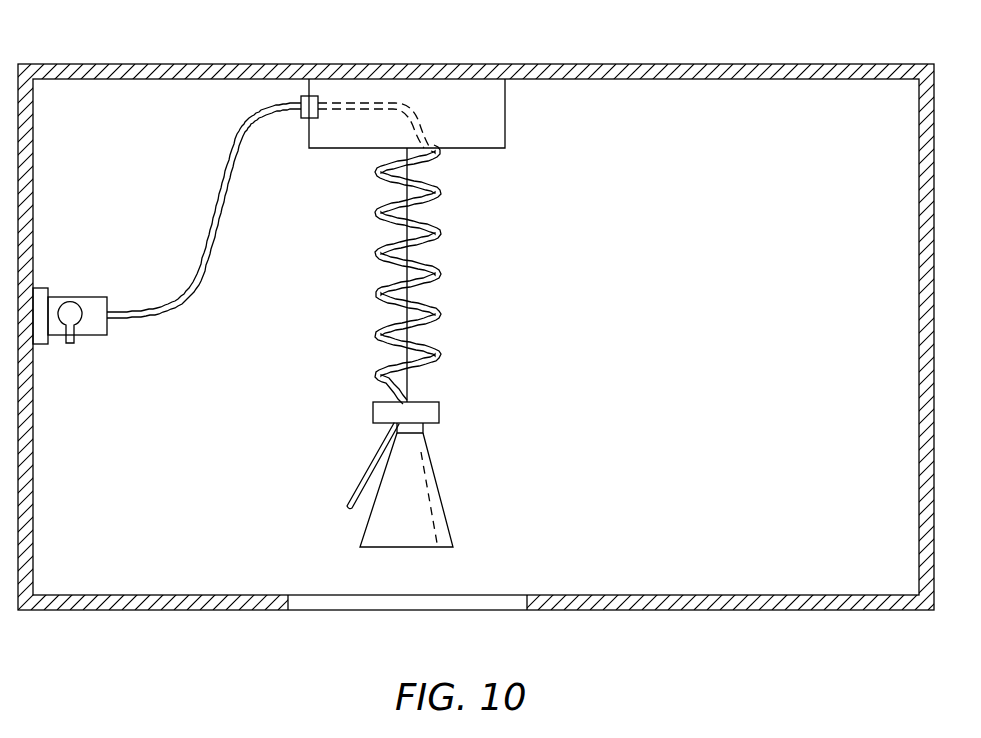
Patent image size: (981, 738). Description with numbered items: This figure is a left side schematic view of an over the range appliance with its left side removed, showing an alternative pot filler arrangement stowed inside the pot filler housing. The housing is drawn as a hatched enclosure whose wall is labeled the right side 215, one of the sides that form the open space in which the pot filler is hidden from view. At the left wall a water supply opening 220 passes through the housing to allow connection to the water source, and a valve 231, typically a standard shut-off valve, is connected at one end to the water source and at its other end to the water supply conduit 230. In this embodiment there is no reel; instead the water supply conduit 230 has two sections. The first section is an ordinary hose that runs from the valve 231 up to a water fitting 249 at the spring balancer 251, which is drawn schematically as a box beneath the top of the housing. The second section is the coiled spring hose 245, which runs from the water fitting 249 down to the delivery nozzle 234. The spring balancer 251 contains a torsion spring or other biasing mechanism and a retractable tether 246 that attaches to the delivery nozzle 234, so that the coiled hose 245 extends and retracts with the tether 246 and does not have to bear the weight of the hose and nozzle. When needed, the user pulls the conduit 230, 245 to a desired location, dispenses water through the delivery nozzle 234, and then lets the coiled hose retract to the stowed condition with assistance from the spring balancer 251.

The right side 215 is at (775, 329).
The water supply opening 220 is at (41, 298).
The valve 231 is at (90, 297).
The water supply conduit 230 is at (195, 280).
The water fitting 249 is at (302, 95).
The spring balancer 251 is at (482, 122).
The tether 246 is at (405, 312).
The coiled spring hose 245 is at (440, 232).
The delivery nozzle 234 is at (447, 525).